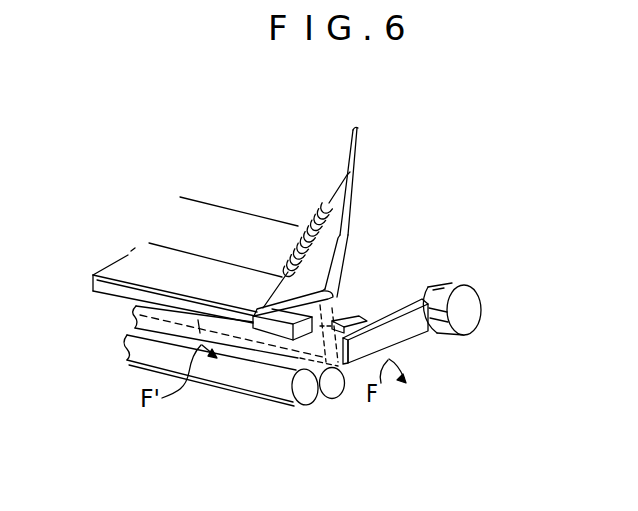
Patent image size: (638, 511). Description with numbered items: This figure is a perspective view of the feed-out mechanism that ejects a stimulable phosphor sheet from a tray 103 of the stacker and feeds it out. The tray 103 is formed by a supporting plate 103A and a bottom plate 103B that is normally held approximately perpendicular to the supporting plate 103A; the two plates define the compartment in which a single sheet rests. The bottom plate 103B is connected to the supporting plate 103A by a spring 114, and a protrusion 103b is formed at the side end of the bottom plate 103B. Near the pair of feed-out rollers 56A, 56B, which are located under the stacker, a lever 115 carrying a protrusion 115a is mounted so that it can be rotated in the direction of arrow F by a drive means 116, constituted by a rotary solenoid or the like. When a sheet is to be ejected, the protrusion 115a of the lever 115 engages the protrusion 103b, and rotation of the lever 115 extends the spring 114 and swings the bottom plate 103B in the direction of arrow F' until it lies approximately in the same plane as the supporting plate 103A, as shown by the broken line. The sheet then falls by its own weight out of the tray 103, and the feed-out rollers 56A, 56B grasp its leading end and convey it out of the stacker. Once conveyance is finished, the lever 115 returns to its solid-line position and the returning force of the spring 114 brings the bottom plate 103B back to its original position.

The tray 103 is at (250, 225).
The supporting plate 103A is at (328, 169).
The bottom plate 103B is at (128, 269).
The protrusion 103b is at (302, 292).
The spring 114 is at (283, 246).
The lever 115 is at (414, 332).
The protrusion 115a is at (353, 318).
The drive means 116 is at (466, 323).
The feed-out roller 56A is at (303, 388).
The feed-out roller 56B is at (332, 390).